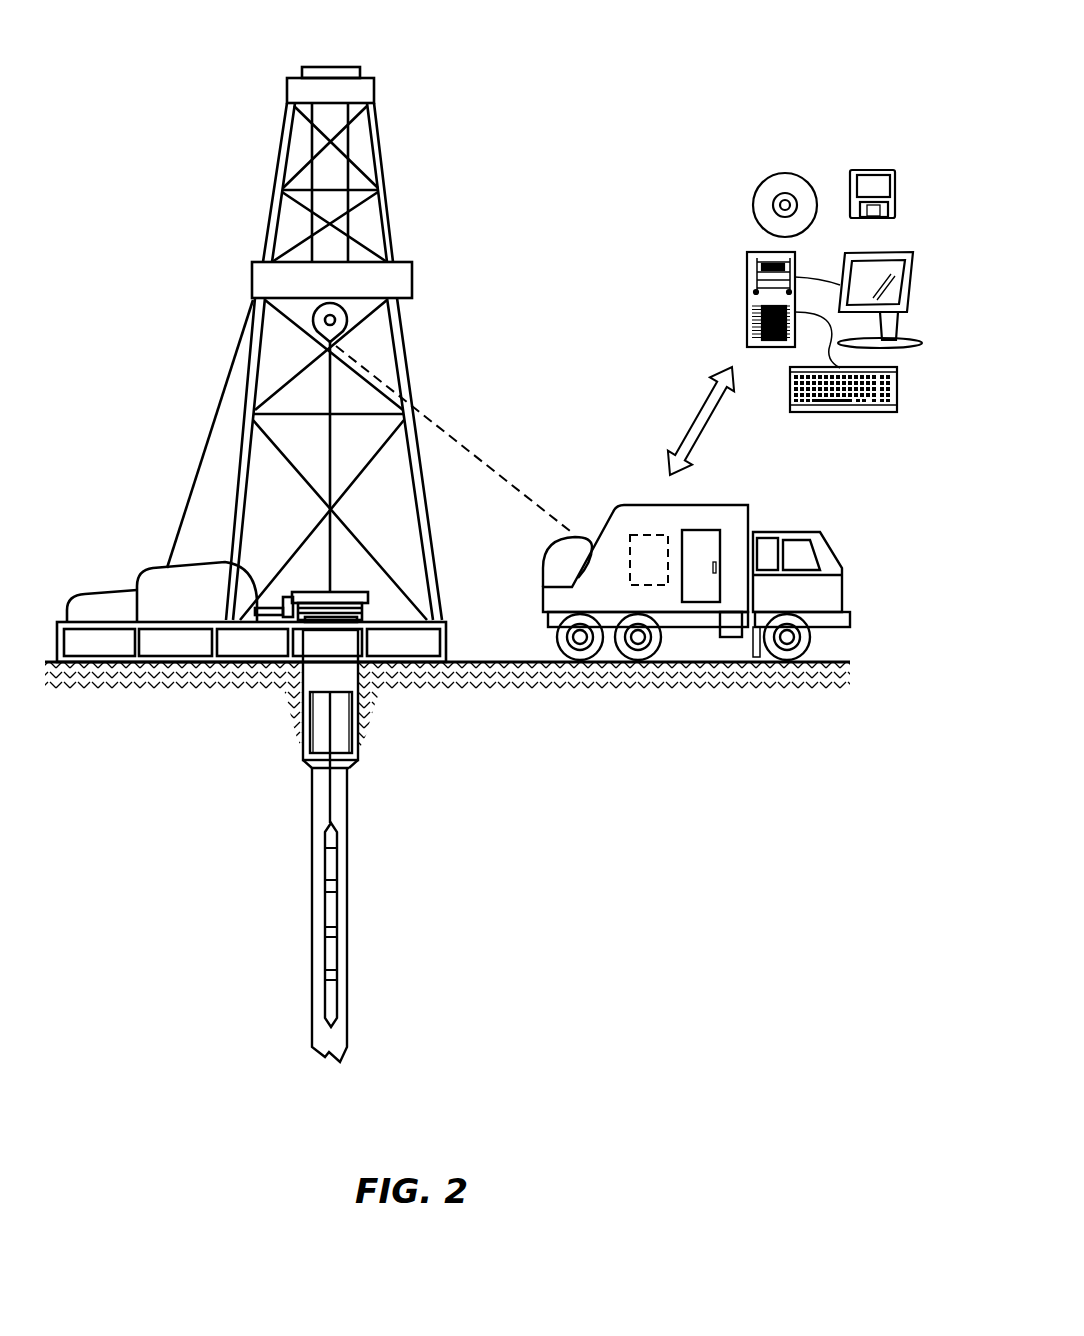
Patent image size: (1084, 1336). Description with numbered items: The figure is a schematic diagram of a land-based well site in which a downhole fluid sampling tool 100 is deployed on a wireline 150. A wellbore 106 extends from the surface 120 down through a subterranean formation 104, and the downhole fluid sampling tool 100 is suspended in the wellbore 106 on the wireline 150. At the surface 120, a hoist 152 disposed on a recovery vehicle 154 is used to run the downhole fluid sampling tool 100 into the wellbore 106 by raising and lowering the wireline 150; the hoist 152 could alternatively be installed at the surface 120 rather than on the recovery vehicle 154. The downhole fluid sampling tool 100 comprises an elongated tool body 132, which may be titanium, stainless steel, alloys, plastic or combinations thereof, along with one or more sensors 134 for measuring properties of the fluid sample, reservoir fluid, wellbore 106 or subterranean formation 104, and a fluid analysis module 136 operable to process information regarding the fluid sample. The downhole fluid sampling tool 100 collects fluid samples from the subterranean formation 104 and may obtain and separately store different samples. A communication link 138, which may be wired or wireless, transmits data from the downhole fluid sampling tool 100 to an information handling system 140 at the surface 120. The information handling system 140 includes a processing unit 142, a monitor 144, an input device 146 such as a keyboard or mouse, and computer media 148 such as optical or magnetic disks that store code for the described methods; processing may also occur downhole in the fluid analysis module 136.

The downhole fluid sampling tool 100 is at (337, 947).
The subterranean formation 104 is at (584, 950).
The wellbore 106 is at (312, 815).
The surface 120 is at (843, 662).
The tool body 132 is at (314, 955).
The sensors 134 is at (340, 978).
The fluid analysis module 136 is at (325, 930).
The communication link 138 is at (696, 407).
The information handling system 140 is at (798, 284).
The processing unit 142 is at (747, 272).
The monitor 144 is at (913, 258).
The input device 146 is at (853, 412).
The computer media 148 is at (873, 170).
The wireline 150 is at (328, 794).
The hoist 152 is at (545, 552).
The recovery vehicle 154 is at (652, 558).